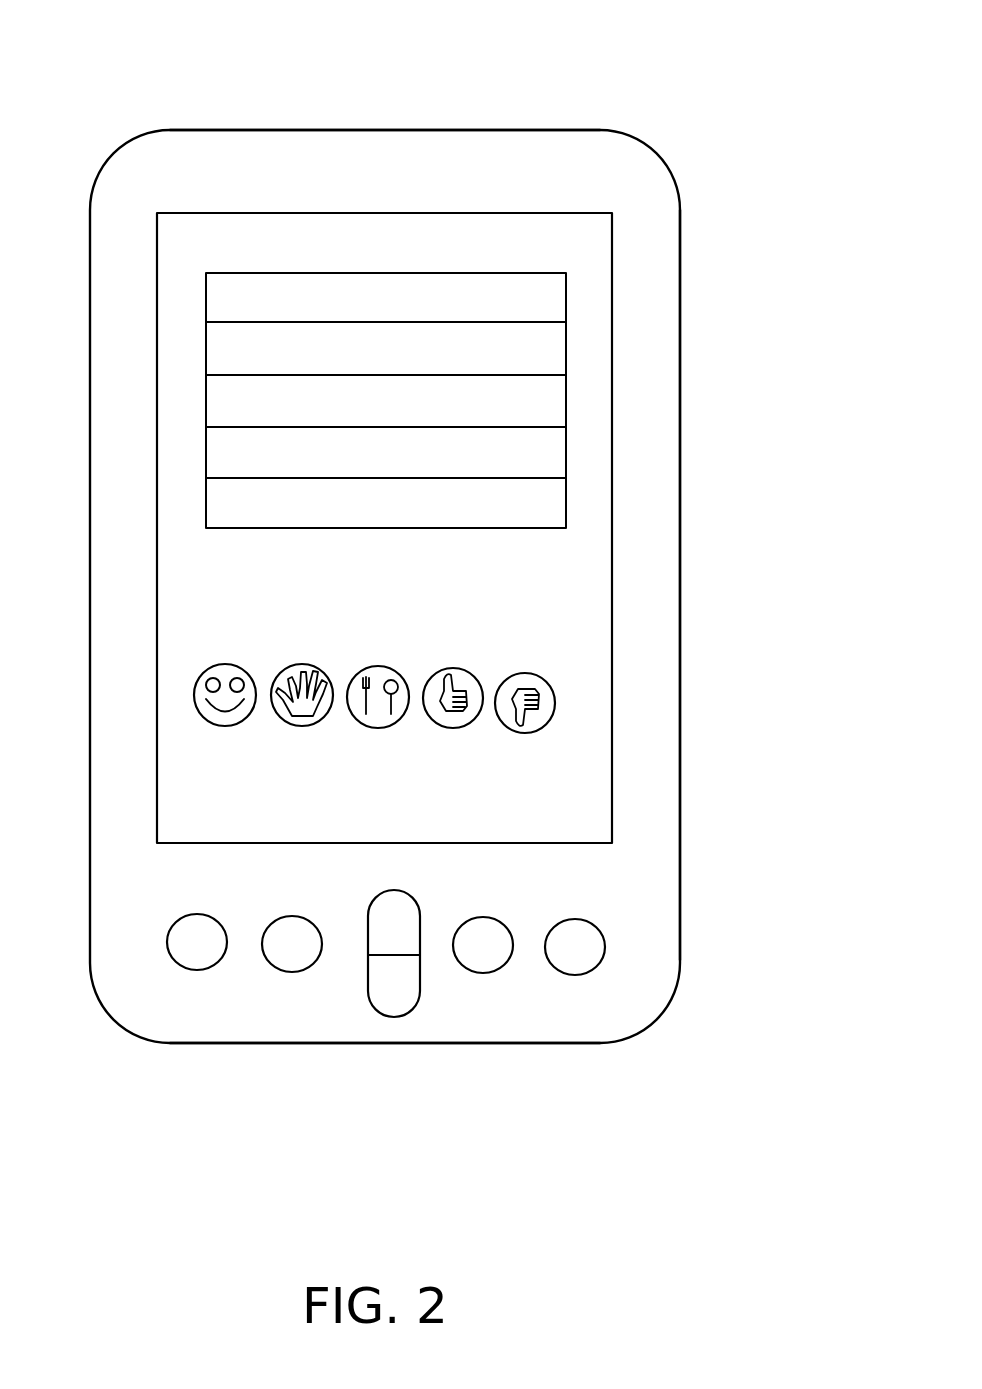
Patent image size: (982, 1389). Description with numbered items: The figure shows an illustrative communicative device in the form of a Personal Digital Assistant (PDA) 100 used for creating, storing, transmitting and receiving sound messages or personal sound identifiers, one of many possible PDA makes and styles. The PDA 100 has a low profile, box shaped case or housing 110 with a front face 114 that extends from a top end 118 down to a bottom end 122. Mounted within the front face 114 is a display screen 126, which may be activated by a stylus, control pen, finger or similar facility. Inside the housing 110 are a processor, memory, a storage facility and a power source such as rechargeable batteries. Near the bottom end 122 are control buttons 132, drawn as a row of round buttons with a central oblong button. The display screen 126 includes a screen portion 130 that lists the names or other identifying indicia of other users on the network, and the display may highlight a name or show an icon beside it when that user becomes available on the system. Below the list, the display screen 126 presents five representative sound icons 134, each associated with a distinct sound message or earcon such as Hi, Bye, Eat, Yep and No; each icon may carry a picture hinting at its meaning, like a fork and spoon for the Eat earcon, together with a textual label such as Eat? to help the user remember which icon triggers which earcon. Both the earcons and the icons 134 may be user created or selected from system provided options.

The Personal Digital Assistant (PDA) 100 is at (642, 91).
The housing 110 is at (679, 727).
The front face 114 is at (645, 812).
The top end 118 is at (380, 130).
The bottom end 122 is at (648, 1012).
The display screen 126 is at (602, 578).
The screen portion 130 is at (548, 273).
The control buttons 132 is at (172, 1005).
The icons 134 is at (200, 780).